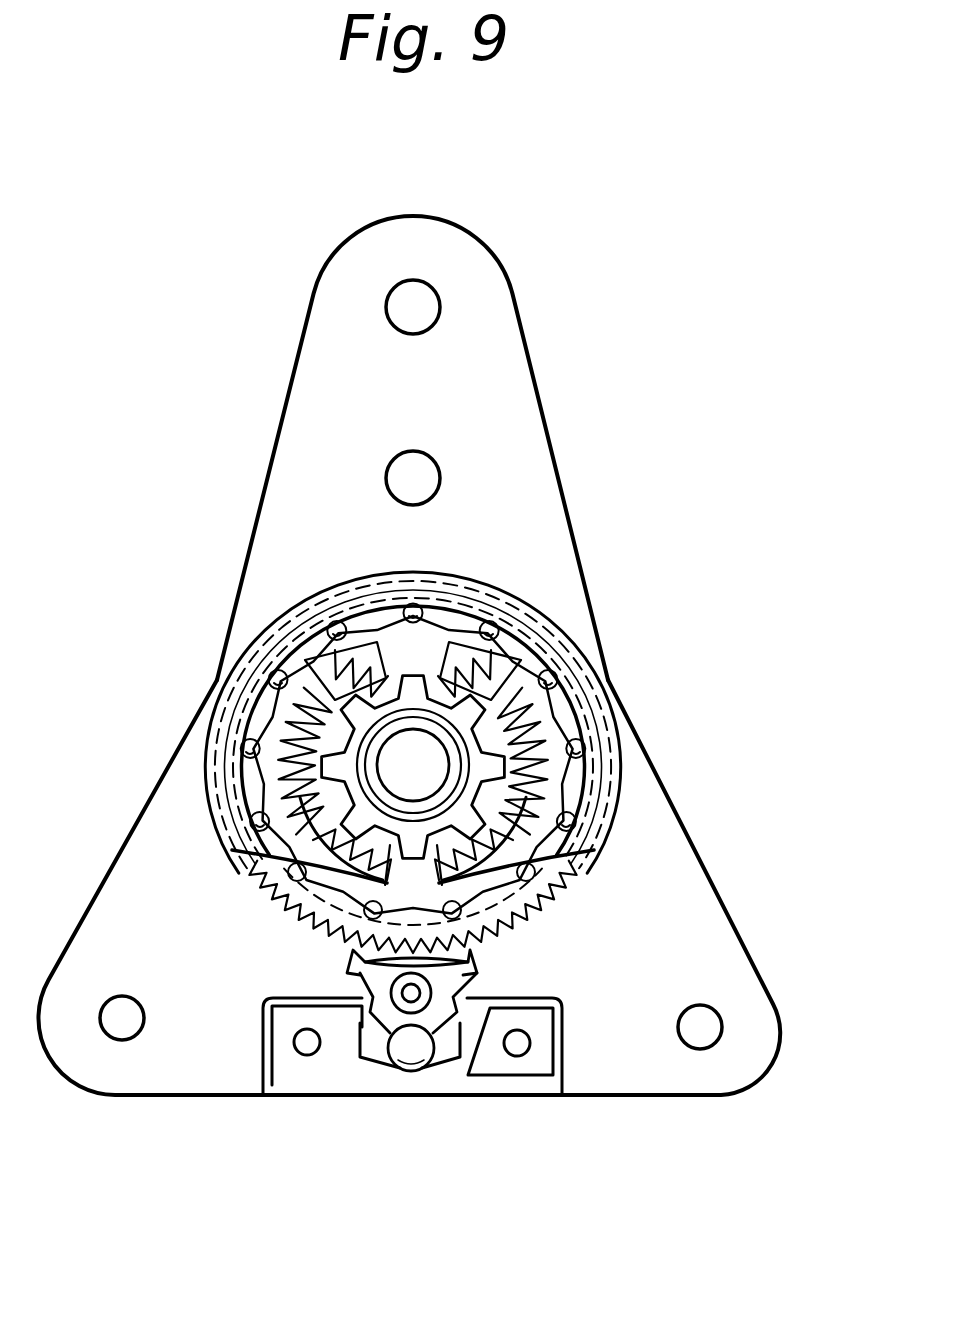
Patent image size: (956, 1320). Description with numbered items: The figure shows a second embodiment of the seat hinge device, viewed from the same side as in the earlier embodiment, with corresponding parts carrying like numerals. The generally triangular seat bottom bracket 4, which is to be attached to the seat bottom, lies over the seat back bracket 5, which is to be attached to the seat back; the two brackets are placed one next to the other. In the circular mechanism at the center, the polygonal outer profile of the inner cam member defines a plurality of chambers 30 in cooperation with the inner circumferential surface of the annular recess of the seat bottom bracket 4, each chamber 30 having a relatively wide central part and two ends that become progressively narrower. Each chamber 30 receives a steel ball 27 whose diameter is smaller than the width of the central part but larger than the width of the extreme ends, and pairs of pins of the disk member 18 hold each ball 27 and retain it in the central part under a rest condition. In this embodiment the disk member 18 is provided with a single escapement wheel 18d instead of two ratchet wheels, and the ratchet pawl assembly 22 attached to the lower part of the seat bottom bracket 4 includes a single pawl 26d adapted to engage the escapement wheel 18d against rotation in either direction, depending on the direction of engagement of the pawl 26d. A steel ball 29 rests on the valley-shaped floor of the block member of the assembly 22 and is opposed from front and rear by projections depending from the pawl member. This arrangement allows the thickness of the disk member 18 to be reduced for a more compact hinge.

The seat bottom bracket 4 is at (675, 872).
The seat back bracket 5 is at (540, 402).
The disk member 18 is at (273, 890).
The escapement wheel 18d is at (313, 923).
The ratchet pawl assembly 22 is at (582, 1008).
The pawl 26d is at (360, 1027).
The steel ball 27 is at (487, 622).
The steel ball 29 is at (430, 1063).
The chamber 30 is at (607, 667).